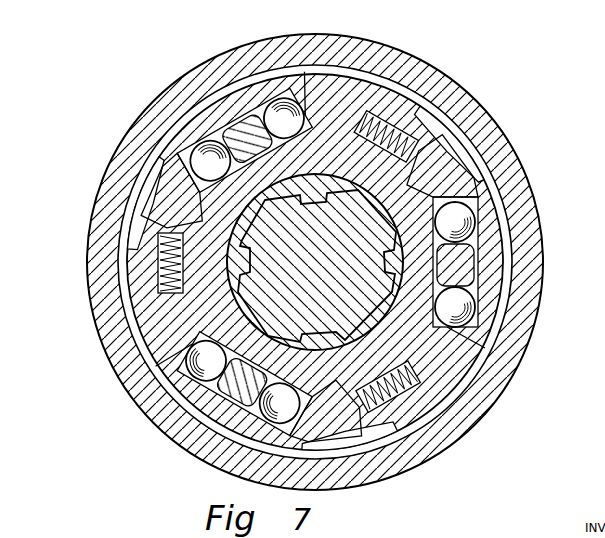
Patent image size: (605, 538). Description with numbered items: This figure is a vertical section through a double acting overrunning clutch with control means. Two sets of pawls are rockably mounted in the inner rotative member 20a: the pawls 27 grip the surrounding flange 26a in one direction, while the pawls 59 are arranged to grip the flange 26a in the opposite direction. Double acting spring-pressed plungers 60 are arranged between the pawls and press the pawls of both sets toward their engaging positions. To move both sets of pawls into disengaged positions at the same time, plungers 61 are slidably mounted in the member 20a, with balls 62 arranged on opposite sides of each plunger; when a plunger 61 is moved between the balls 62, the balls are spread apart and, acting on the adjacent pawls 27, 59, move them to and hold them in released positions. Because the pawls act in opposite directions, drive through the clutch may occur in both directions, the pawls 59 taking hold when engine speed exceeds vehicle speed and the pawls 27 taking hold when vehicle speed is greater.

The inner rotative member 20a is at (420, 440).
The flange 26a is at (467, 98).
The pawls 27 is at (332, 77).
The pawls 59 is at (463, 153).
The double acting spring-pressed plungers 60 is at (408, 115).
The plungers 61 is at (237, 82).
The balls 62 is at (270, 92).